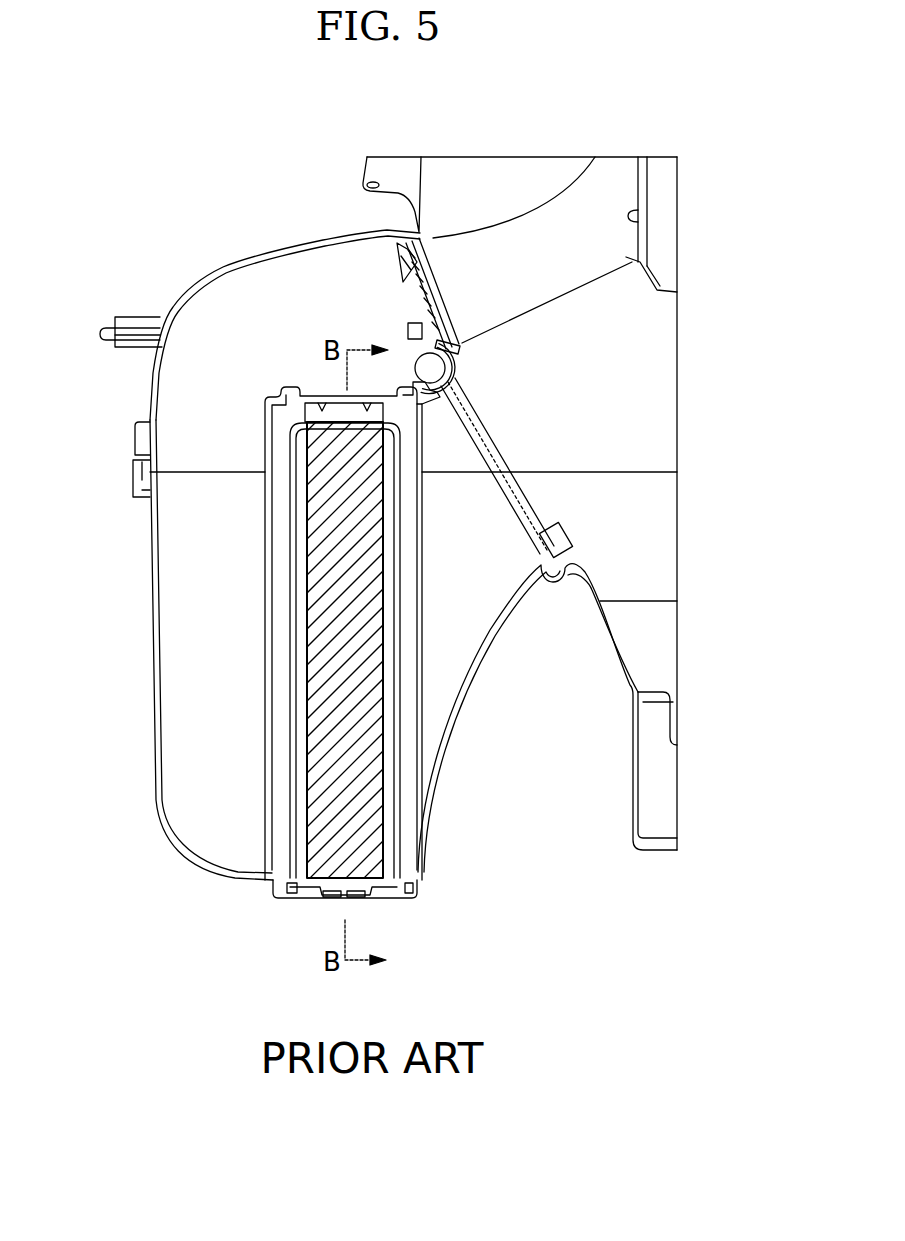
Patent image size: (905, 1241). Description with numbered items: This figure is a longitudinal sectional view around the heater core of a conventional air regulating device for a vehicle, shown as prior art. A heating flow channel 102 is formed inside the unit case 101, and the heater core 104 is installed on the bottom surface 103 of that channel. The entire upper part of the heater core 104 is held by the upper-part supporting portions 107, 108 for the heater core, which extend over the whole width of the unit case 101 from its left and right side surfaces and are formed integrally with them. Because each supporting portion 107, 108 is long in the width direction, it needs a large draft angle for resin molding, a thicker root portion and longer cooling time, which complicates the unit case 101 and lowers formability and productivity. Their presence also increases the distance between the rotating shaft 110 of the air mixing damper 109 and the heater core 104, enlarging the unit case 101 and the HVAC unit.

The unit case 101 is at (232, 258).
The heating flow channel 102 is at (234, 651).
The bottom surface 103 is at (303, 901).
The heater core 104 is at (365, 735).
The upper-part supporting portion for the heater core 107 is at (310, 393).
The upper-part supporting portion for the heater core 108 is at (334, 599).
The air mixing damper 109 is at (488, 452).
The rotating shaft 110 is at (440, 370).